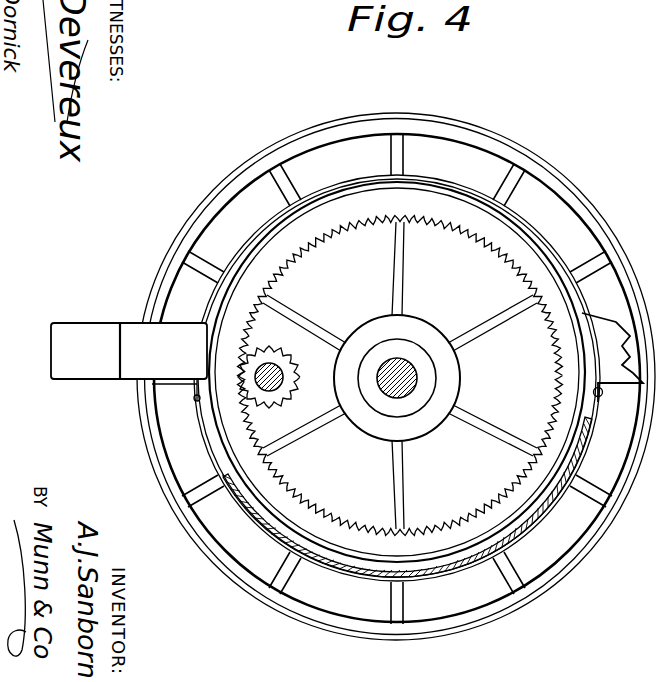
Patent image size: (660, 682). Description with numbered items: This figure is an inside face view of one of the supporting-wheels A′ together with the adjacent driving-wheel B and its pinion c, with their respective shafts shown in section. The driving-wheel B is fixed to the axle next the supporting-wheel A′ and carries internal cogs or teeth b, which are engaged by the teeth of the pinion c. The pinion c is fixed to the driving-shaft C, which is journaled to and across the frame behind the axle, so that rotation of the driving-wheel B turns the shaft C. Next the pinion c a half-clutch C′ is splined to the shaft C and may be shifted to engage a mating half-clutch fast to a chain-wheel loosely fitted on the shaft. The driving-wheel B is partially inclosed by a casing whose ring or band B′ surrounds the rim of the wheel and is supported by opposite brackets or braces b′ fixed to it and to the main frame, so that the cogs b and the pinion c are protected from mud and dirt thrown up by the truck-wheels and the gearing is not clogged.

The wheels A′ is at (396, 376).
The driving-wheel B is at (517, 294).
The ring or band B′ is at (418, 183).
The internal cogs or teeth b is at (350, 227).
The brackets or braces b′ is at (129, 362).
The driving-shaft C is at (284, 379).
The pinion c is at (262, 352).
The half-clutch C′ is at (645, 278).